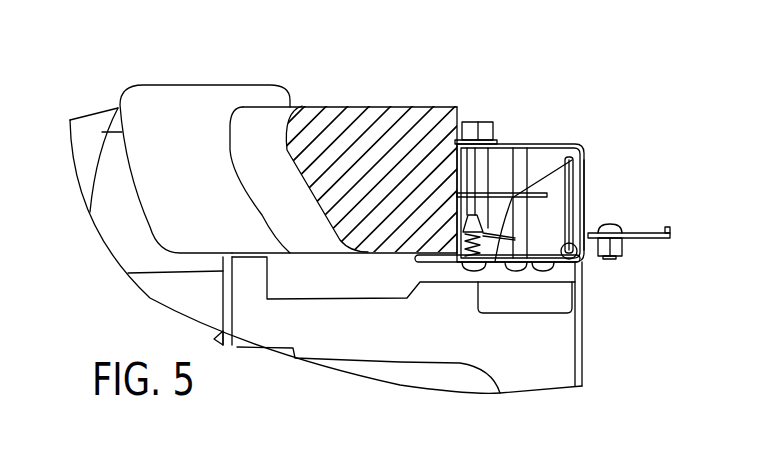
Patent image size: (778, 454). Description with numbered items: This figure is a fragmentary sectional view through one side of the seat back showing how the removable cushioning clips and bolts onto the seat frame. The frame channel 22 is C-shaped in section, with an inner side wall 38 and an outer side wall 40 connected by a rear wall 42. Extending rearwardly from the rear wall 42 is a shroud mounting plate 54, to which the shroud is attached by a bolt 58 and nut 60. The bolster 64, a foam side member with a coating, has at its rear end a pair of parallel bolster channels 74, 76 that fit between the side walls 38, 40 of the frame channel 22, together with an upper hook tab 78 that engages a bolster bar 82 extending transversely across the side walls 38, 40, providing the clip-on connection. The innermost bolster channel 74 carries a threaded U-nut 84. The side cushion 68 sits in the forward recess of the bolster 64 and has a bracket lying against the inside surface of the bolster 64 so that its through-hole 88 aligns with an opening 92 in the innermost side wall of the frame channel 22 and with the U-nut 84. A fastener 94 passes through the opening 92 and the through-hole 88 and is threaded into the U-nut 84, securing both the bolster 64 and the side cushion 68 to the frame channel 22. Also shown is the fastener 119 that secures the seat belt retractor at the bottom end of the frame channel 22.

The frame channel 22 is at (587, 187).
The inner side wall 38 is at (583, 255).
The outer side wall 40 is at (575, 146).
The rear wall 42 is at (588, 210).
The shroud mounting plate 54 is at (657, 247).
The bolt 58 is at (612, 222).
The nut 60 is at (620, 255).
The bolster 64 is at (343, 107).
The side cushion 68 is at (245, 85).
The innermost bolster channel 74 is at (583, 150).
The bolster channel 76 is at (457, 158).
The upper hook tab 78 is at (488, 187).
The bolster bar 82 is at (512, 195).
The threaded U-nut 84 is at (476, 193).
The through-hole 88 is at (484, 240).
The opening 92 is at (446, 263).
The fastener 94 is at (471, 263).
The fastener 119 is at (472, 122).